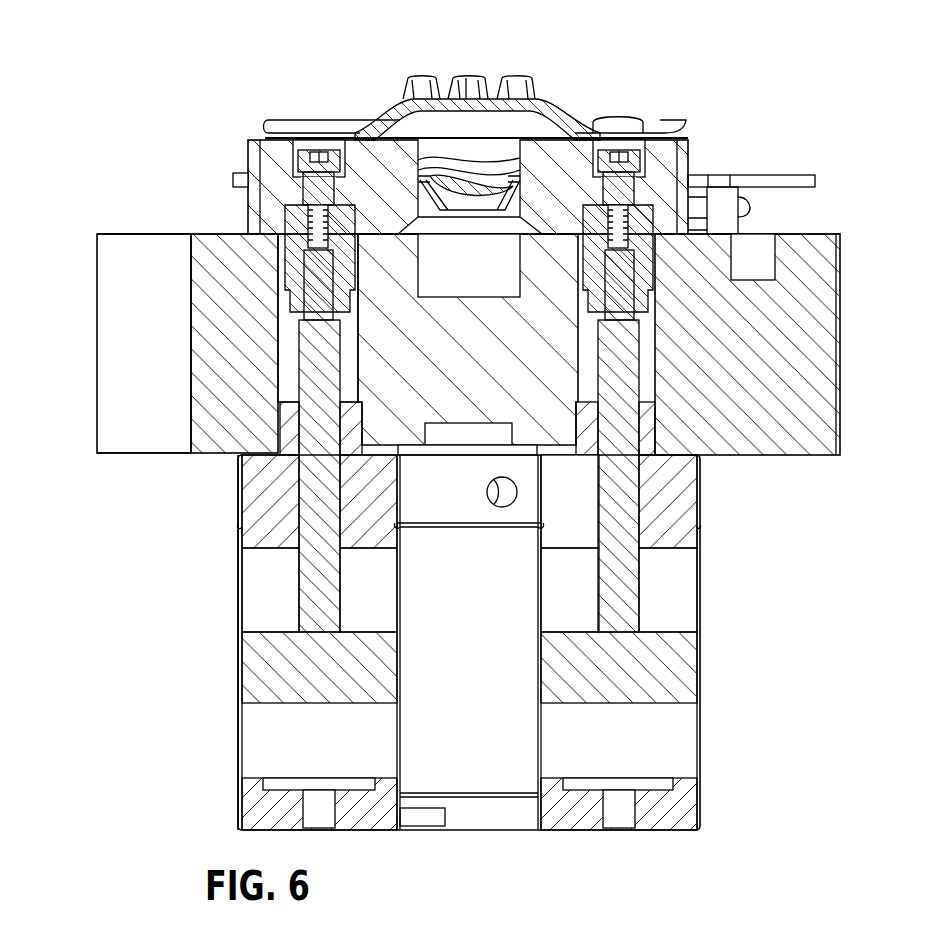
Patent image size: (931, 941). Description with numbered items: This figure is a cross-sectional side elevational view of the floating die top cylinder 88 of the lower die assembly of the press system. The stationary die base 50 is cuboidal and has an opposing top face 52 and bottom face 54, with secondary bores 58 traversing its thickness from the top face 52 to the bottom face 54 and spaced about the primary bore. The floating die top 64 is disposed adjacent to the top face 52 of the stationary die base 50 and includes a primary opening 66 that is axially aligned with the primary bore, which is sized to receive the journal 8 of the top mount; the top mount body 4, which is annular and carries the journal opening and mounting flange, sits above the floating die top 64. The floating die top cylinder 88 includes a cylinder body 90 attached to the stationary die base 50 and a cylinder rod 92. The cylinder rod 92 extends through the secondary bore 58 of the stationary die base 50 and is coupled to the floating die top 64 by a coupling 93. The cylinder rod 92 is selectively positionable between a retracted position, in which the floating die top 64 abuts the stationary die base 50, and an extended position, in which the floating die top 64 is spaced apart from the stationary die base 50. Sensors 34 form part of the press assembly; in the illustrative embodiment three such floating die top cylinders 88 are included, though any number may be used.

The top mount body 4 is at (313, 124).
The journal 8 is at (428, 68).
The sensors 34 is at (755, 207).
The stationary die base 50 is at (97, 330).
The top face 52 is at (120, 234).
The bottom face 54 is at (125, 455).
The secondary bores 58 is at (275, 265).
The floating die top 64 is at (248, 146).
The primary opening 66 is at (415, 168).
The floating die top cylinder 88 is at (228, 690).
The cylinder body 90 is at (238, 630).
The cylinder rod 92 is at (300, 345).
The coupling 93 is at (295, 250).